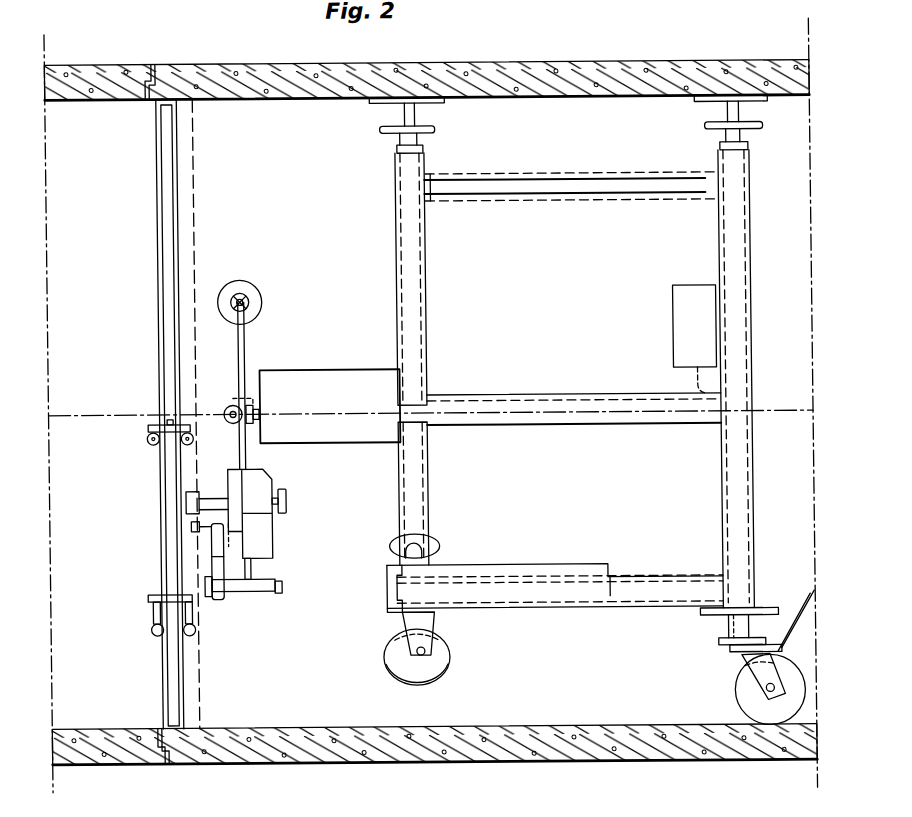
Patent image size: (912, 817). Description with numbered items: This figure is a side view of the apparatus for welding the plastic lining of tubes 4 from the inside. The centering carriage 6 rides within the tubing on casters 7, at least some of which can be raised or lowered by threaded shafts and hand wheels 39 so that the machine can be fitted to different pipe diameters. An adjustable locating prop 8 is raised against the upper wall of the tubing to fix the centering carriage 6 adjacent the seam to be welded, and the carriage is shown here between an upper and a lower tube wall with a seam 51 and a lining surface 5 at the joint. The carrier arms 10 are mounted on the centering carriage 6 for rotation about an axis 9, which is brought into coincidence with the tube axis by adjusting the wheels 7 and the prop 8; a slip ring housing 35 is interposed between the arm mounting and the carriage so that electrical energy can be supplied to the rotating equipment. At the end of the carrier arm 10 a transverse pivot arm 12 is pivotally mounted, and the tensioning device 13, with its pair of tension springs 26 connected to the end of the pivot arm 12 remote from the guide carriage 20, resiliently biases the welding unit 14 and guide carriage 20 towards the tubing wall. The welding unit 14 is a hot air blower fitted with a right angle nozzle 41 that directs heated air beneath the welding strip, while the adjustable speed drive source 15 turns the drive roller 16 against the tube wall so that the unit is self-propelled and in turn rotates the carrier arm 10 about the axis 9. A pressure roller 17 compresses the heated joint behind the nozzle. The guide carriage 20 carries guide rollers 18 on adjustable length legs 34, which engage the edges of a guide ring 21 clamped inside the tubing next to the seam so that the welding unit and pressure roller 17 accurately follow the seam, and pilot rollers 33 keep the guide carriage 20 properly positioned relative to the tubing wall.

The tubes 4 is at (121, 64).
The slab joint 51 is at (157, 76).
The ceiling surface 5 is at (291, 98).
The locating prop 8 is at (419, 104).
The tensioning device 13 is at (232, 270).
The tension springs 26 is at (251, 302).
The pivot arm 12 is at (246, 348).
The slip ring housing 35 is at (344, 377).
The guide ring 21 is at (158, 250).
The axis 9 is at (85, 416).
The carrier arms 10 is at (238, 428).
The guide rollers 18 is at (186, 446).
The pressure roller 17 is at (184, 498).
The drive roller 16 is at (289, 494).
The drive source 15 is at (262, 536).
The right angle nozzle 41 is at (190, 528).
The guide carriage 20 is at (174, 547).
The pilot rollers 33 is at (284, 583).
The welding unit 14 is at (224, 600).
The adjustable length legs 34 is at (188, 623).
The hand wheels 39 is at (438, 540).
The casters 7 is at (447, 660).
The centering carriage 6 is at (623, 640).